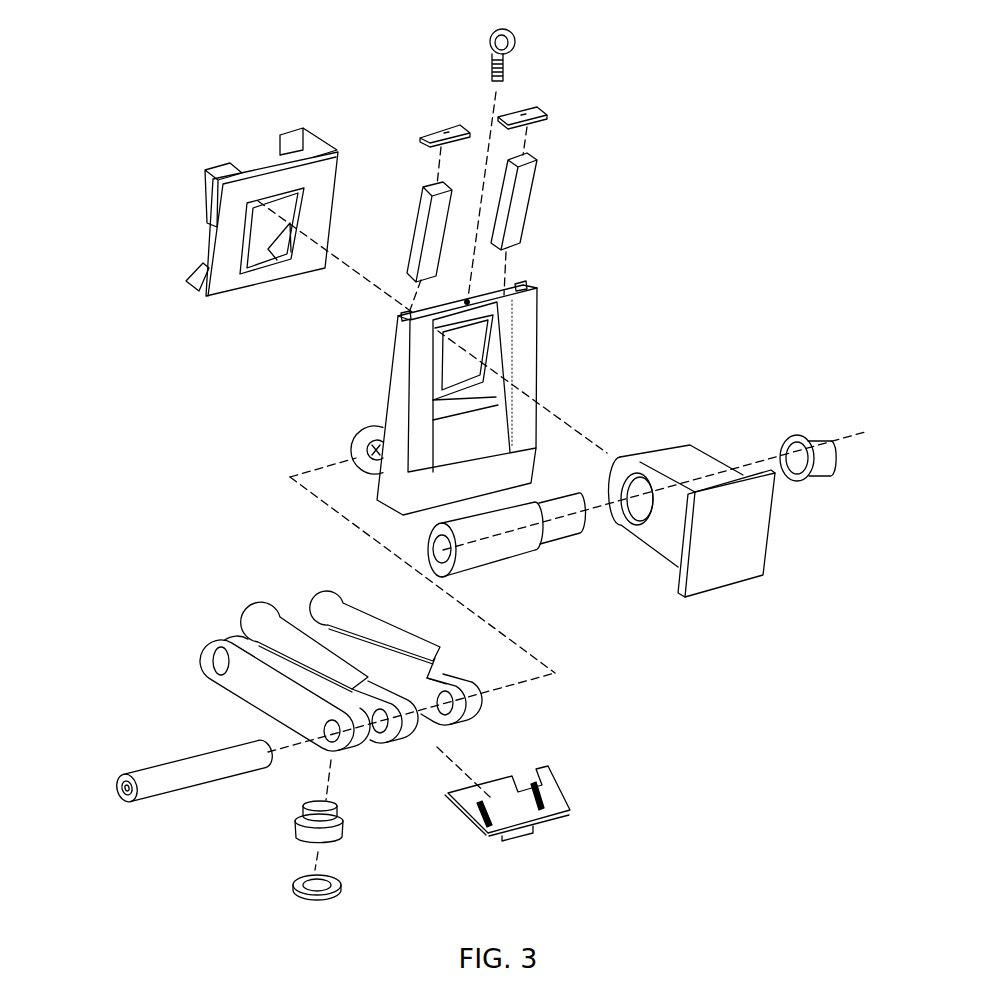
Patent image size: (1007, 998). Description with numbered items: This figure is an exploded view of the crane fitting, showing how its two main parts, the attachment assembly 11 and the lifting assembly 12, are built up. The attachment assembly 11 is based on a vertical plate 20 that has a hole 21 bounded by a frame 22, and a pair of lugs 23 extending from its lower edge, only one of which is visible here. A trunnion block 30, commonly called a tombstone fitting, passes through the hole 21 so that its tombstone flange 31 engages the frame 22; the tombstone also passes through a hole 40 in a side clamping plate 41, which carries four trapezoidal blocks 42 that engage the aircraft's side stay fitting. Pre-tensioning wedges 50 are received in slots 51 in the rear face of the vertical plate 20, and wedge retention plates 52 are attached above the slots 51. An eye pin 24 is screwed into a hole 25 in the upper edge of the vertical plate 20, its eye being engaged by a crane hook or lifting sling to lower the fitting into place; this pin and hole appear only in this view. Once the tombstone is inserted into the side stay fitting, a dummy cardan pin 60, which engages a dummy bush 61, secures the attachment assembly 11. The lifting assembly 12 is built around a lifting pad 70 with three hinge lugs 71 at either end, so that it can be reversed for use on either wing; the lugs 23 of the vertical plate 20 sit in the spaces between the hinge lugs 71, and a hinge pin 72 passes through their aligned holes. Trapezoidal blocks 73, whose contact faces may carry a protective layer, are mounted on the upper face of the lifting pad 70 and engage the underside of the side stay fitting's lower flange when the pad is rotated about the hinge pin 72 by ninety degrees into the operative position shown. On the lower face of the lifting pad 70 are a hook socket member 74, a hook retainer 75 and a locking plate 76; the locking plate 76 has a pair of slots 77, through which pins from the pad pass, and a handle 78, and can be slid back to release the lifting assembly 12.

The attachment assembly 11 is at (308, 420).
The lifting assembly 12 is at (580, 676).
The vertical plate 20 is at (537, 346).
The hole 21 is at (455, 343).
The frame 22 is at (505, 306).
The lugs 23 is at (362, 428).
The eye pin 24 is at (490, 40).
The hole 25 is at (465, 301).
The trunnion block 30 is at (662, 450).
The tombstone flange 31 is at (771, 541).
The hole 40 is at (254, 260).
The side clamping plate 41 is at (203, 243).
The trapezoidal blocks 42 is at (300, 135).
The pre-tensioning wedges 50 is at (440, 233).
The slots 51 is at (405, 313).
The wedge retention plates 52 is at (446, 126).
The dummy cardan pin 60 is at (510, 556).
The dummy bush 61 is at (821, 473).
The lifting pad 70 is at (263, 614).
The hinge lugs 71 is at (202, 638).
The hinge pin 72 is at (178, 756).
The trapezoidal blocks 73 is at (277, 643).
The hook socket member 74 is at (294, 829).
The hook retainer 75 is at (296, 888).
The locking plate 76 is at (571, 804).
The slots 77 is at (541, 792).
The handle 78 is at (513, 834).